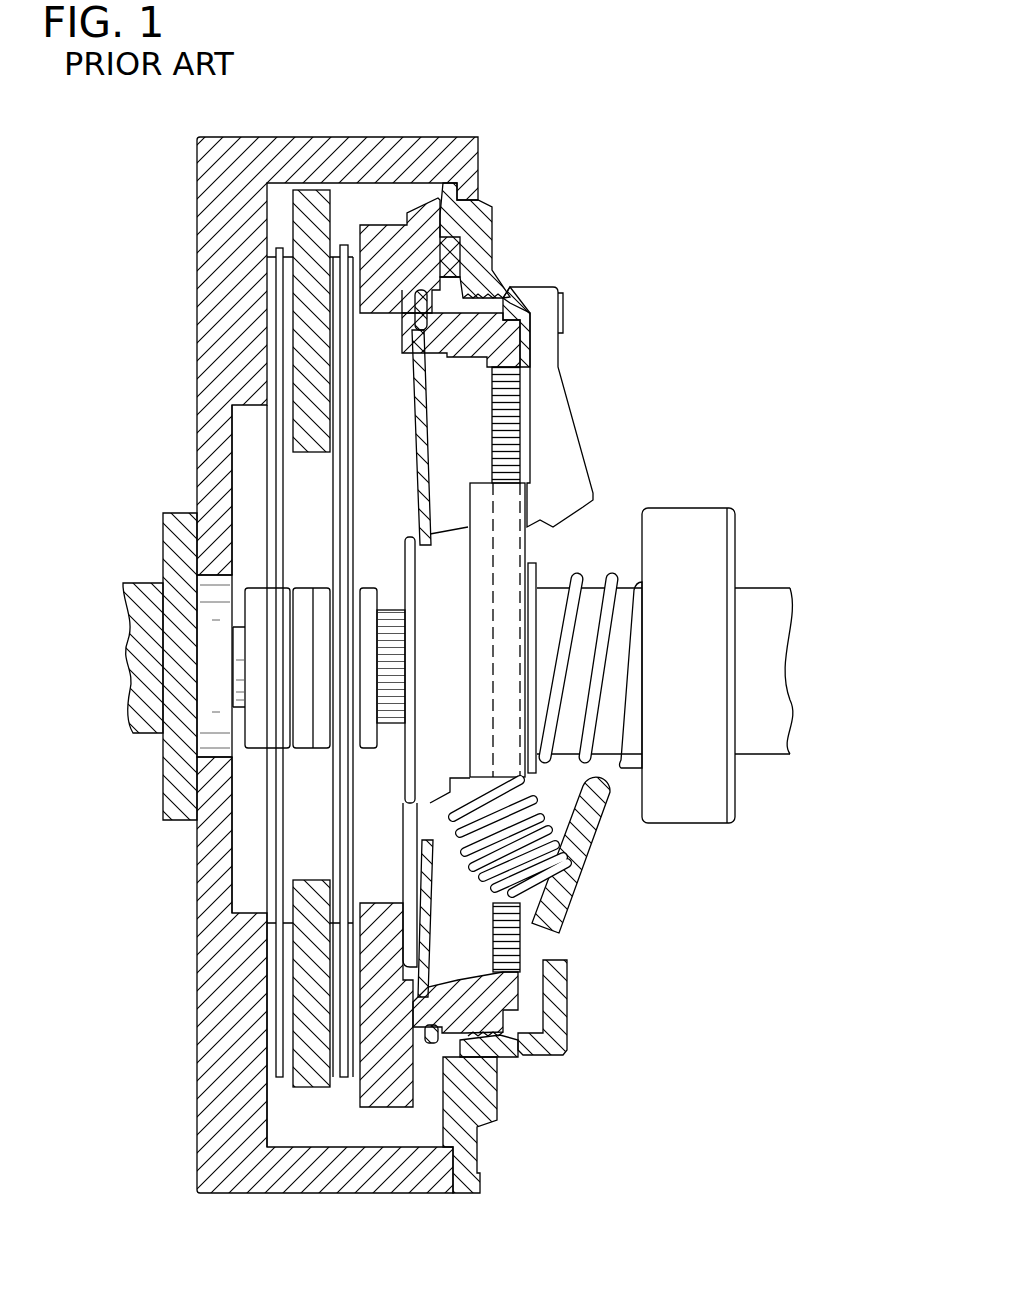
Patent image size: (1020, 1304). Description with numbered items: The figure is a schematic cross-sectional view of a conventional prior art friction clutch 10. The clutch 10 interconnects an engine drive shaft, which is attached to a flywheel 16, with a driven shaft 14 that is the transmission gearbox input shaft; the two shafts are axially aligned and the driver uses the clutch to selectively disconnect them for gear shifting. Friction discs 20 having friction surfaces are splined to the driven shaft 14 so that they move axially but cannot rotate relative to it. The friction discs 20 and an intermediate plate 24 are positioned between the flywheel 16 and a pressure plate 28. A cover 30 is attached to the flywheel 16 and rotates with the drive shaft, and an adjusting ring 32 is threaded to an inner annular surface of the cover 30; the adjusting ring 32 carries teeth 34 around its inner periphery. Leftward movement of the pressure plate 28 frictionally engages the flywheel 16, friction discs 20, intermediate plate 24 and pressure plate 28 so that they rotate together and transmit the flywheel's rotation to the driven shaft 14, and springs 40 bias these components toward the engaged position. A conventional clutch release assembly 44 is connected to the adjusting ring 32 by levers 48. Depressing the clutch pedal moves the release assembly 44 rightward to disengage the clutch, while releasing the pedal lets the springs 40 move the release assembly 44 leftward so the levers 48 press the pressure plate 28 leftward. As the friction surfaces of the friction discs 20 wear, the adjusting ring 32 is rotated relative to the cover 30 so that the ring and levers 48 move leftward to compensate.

The friction clutch 10 is at (708, 162).
The driven shaft 14 is at (760, 695).
The flywheel 16 is at (298, 1193).
The friction discs 20 is at (340, 235).
The intermediate plate 24 is at (305, 318).
The pressure plate 28 is at (367, 375).
The cover 30 is at (480, 183).
The adjusting ring 32 is at (520, 400).
The teeth 34 is at (508, 935).
The springs 40 is at (565, 835).
The clutch release assembly 44 is at (528, 547).
The levers 48 is at (440, 470).